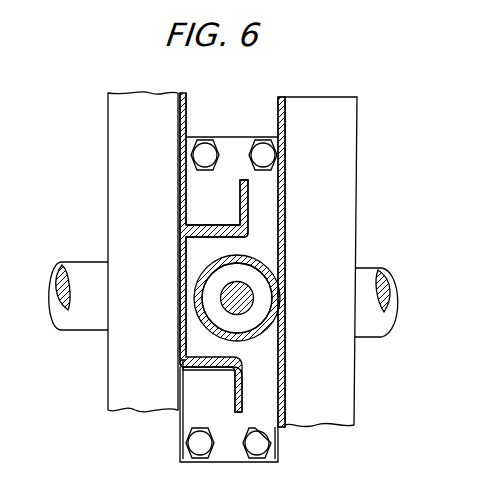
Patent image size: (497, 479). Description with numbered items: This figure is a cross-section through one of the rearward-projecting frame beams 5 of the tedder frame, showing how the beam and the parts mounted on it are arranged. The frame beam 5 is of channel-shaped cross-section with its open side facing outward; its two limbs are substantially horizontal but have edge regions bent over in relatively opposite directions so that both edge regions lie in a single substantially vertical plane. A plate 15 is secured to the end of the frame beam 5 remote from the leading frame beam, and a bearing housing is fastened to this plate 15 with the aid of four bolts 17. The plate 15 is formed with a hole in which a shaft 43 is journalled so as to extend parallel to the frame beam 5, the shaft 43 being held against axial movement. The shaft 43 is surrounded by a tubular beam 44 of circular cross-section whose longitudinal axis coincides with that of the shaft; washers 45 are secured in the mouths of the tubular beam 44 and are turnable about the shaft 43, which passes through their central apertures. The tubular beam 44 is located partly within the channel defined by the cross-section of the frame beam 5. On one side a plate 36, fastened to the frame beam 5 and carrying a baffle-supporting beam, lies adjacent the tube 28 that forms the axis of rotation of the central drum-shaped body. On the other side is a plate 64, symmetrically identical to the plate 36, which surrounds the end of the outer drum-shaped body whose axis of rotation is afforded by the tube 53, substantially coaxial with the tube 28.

The frame beam 5 is at (224, 227).
The plate 15 is at (185, 426).
The bolts 17 is at (249, 144).
The tube 28 is at (80, 330).
The plate 36 is at (108, 392).
The shaft 43 is at (222, 298).
The tubular beam 44 is at (252, 260).
The washers 45 is at (243, 318).
The tube 53 is at (377, 268).
The plate 64 is at (346, 414).